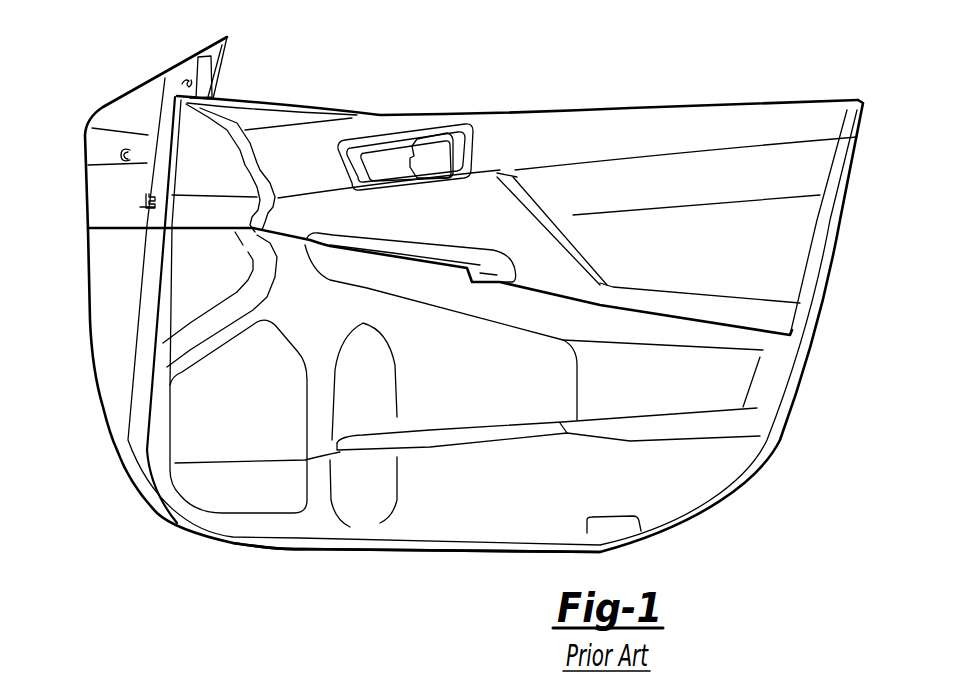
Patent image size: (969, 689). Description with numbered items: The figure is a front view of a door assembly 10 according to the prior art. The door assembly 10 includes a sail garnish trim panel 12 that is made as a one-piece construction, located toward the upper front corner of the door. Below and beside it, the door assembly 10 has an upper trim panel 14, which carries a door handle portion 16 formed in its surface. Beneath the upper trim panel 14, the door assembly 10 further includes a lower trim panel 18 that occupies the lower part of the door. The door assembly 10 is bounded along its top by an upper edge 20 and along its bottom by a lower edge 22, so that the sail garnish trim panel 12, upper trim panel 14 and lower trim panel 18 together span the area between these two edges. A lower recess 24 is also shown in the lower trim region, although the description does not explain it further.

The door assembly 10 is at (72, 300).
The sail garnish trim panel 12 is at (93, 147).
The upper trim panel 14 is at (647, 187).
The door handle portion 16 is at (447, 157).
The lower trim panel 18 is at (74, 262).
The upper edge 20 is at (397, 112).
The lower edge 22 is at (453, 552).
The lower map pocket recess 24 is at (190, 395).